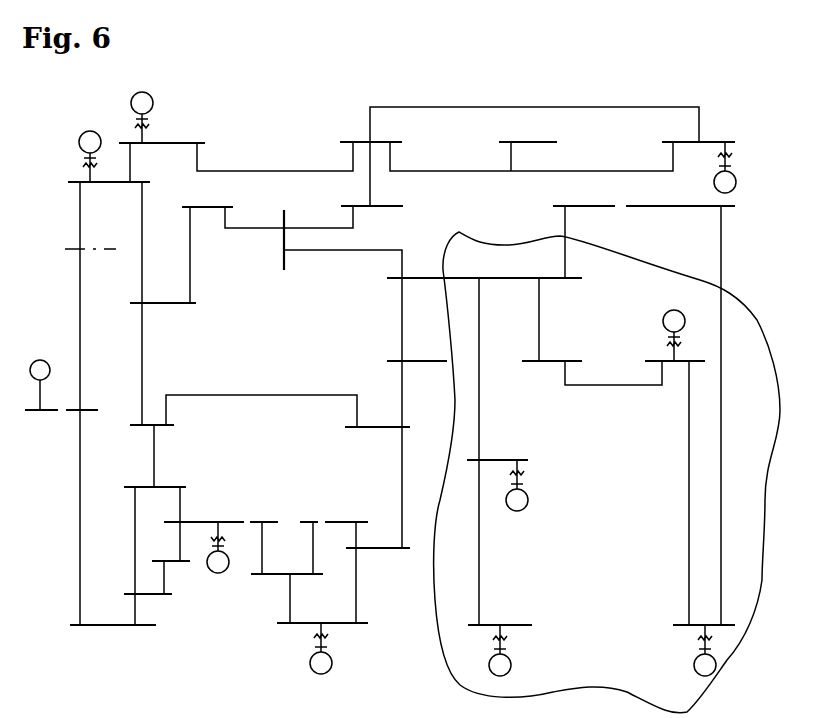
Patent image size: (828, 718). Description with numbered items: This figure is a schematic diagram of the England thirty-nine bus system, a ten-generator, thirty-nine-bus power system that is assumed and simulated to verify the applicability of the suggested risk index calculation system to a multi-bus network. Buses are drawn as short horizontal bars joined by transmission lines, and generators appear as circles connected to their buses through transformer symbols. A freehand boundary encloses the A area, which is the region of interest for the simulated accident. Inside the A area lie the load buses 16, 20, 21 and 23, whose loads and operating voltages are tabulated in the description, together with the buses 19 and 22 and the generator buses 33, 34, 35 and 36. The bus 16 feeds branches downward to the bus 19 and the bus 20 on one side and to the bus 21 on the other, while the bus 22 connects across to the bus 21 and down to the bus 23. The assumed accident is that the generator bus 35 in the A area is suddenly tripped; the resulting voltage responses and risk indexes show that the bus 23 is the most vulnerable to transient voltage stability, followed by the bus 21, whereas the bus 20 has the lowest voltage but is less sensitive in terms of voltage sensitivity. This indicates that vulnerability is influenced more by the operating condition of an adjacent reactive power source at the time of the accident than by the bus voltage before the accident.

The bus 16 is at (484, 442).
The bus 19 is at (497, 451).
The bus 20 is at (500, 616).
The bus 21 is at (592, 363).
The bus 22 is at (673, 484).
The bus 23 is at (704, 616).
The generator bus 33 is at (525, 485).
The generator bus 34 is at (509, 650).
The generator bus 35 is at (683, 335).
The generator bus 36 is at (713, 650).
The A area A is at (607, 472).